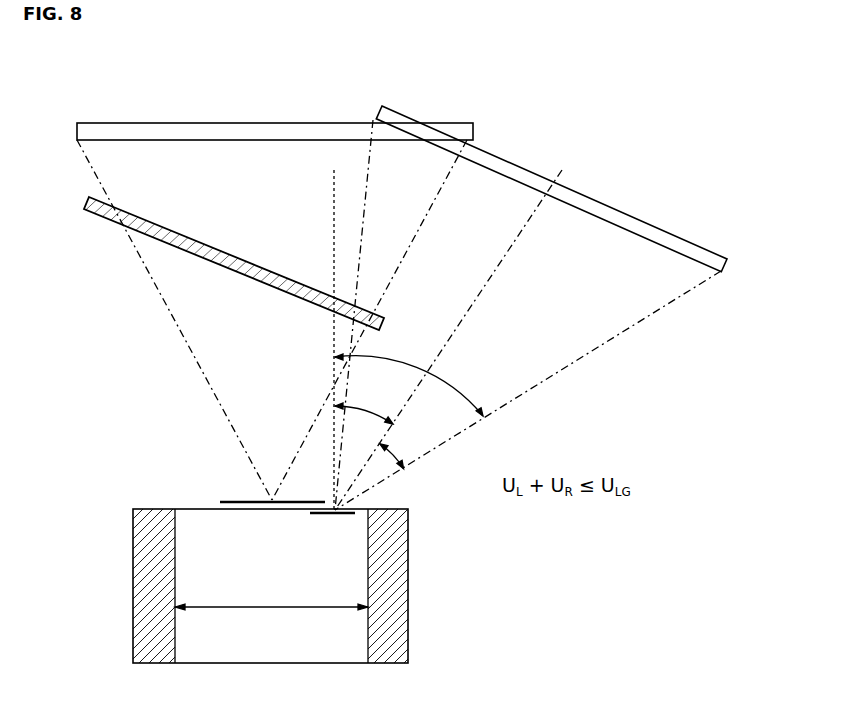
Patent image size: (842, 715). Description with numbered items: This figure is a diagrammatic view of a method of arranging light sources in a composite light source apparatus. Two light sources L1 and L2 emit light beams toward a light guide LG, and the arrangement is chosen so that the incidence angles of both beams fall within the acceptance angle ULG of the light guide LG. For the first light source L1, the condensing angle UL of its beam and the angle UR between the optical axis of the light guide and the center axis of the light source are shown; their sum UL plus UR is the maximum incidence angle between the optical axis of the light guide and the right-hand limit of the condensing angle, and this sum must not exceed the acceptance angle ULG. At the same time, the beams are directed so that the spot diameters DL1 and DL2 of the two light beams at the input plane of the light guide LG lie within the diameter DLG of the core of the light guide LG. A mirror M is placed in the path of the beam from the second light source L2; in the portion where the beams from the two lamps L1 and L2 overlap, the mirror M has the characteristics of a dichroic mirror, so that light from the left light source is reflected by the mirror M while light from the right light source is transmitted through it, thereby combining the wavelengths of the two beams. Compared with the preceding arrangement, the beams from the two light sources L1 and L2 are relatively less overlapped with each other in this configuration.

The light source L1 is at (505, 160).
The light source L2 is at (245, 123).
The mirror M is at (250, 252).
The light guide LG is at (408, 545).
The diameter of the core of the light guide DLG is at (271, 595).
The diameter of the spot of the light beam from light source 1 DL1 is at (322, 516).
The diameter of the spot of the light beam from light source 2 DL2 is at (242, 501).
The condensing angle of the light source UL is at (399, 452).
The angle between the optical axis of the light guide and the center axis of the lig UR is at (364, 405).
The acceptance angle of the light guide ULG is at (409, 385).